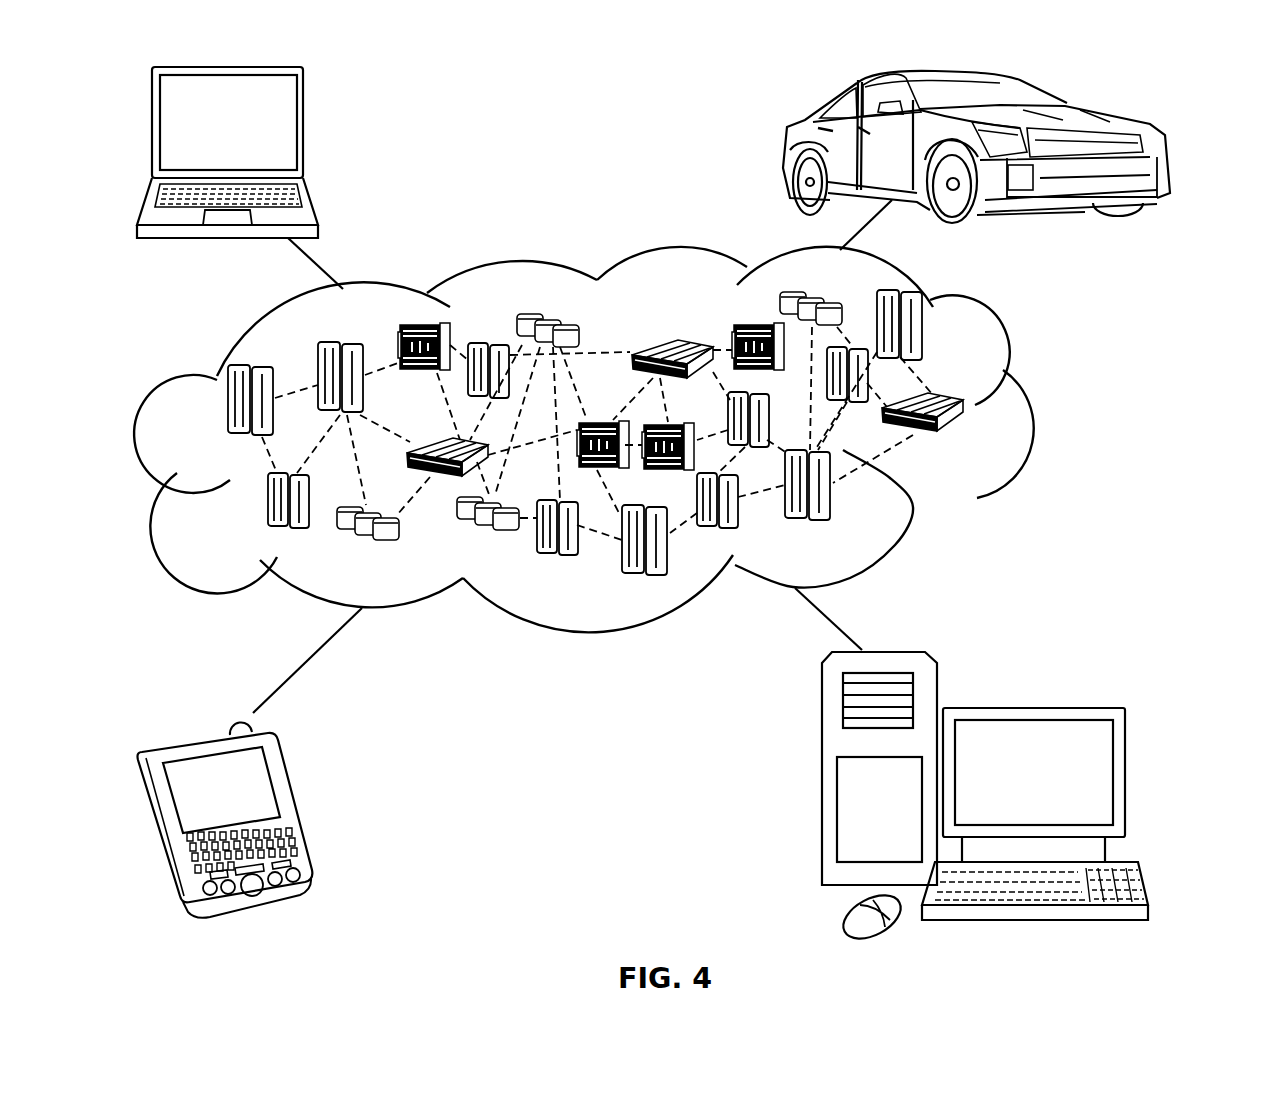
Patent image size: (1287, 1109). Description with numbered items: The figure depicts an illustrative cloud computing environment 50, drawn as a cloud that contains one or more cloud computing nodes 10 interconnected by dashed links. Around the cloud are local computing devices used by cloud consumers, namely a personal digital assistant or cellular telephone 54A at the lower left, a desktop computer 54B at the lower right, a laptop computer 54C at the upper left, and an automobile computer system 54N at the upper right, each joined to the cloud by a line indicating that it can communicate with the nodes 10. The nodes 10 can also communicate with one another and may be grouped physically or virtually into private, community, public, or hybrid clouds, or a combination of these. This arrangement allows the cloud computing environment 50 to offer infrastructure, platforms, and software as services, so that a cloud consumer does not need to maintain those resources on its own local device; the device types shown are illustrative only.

The cloud computing node 10 is at (975, 444).
The cloud computing environment 50 is at (1032, 412).
The personal digital assistant or cellular telephone 54A is at (293, 800).
The desktop computer 54B is at (1032, 708).
The laptop computer 54C is at (305, 131).
The automobile computer system 54N is at (790, 148).